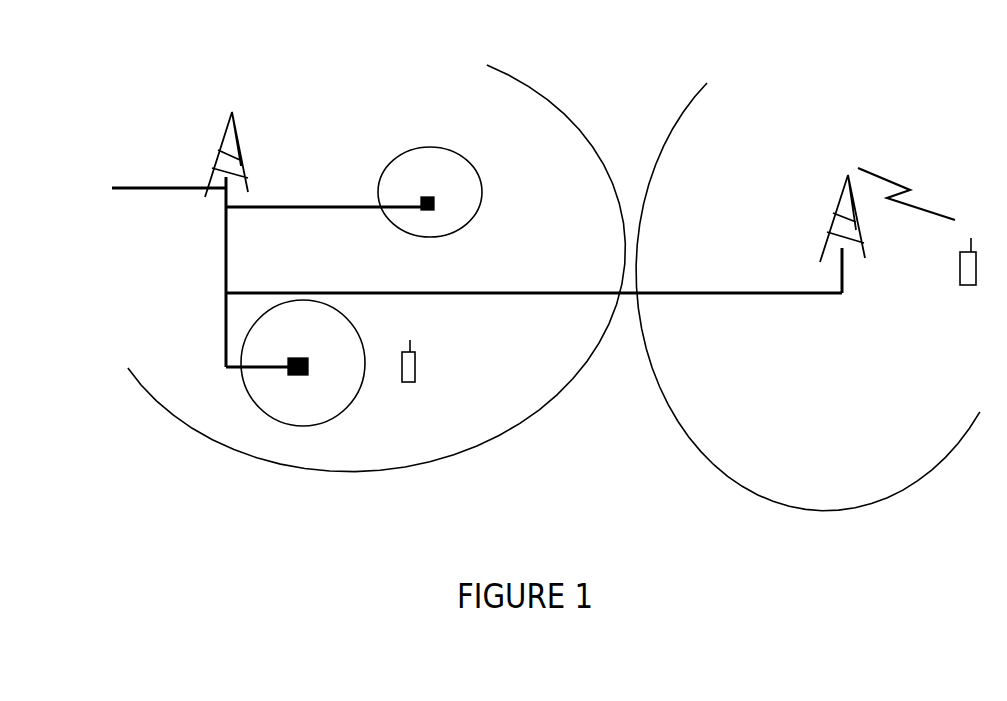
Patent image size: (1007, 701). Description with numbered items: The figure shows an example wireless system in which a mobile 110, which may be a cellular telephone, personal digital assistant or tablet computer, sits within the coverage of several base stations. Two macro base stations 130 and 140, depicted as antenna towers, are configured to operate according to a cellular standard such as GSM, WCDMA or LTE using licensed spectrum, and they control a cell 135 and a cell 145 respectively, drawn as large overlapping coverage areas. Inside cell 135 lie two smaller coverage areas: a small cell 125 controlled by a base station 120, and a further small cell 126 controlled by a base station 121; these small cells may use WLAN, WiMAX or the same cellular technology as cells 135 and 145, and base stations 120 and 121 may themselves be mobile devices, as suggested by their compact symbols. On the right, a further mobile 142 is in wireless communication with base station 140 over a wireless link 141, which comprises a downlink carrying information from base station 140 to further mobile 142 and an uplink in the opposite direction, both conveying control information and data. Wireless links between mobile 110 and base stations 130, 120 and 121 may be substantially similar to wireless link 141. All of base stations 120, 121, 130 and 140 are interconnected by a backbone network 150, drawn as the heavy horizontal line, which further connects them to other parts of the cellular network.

The mobile 110 is at (415, 372).
The base station 120 is at (295, 358).
The base station 121 is at (427, 197).
The small cell 125 is at (300, 427).
The further small cell 126 is at (422, 148).
The base station 130 is at (205, 239).
The cell 135 is at (523, 422).
The base station 140 is at (827, 234).
The wireless link 141 is at (906, 194).
The further mobile 142 is at (968, 285).
The cell 145 is at (727, 477).
The backbone network 150 is at (534, 278).